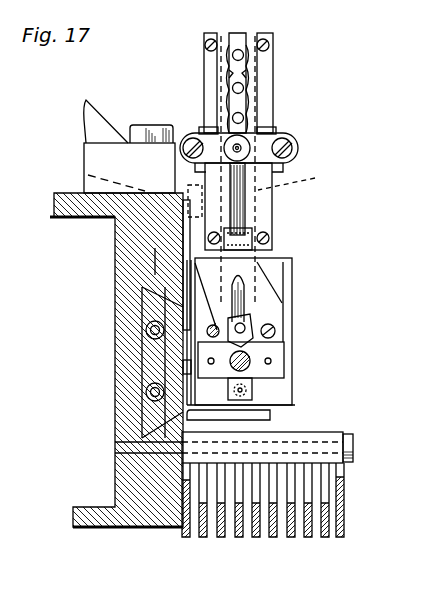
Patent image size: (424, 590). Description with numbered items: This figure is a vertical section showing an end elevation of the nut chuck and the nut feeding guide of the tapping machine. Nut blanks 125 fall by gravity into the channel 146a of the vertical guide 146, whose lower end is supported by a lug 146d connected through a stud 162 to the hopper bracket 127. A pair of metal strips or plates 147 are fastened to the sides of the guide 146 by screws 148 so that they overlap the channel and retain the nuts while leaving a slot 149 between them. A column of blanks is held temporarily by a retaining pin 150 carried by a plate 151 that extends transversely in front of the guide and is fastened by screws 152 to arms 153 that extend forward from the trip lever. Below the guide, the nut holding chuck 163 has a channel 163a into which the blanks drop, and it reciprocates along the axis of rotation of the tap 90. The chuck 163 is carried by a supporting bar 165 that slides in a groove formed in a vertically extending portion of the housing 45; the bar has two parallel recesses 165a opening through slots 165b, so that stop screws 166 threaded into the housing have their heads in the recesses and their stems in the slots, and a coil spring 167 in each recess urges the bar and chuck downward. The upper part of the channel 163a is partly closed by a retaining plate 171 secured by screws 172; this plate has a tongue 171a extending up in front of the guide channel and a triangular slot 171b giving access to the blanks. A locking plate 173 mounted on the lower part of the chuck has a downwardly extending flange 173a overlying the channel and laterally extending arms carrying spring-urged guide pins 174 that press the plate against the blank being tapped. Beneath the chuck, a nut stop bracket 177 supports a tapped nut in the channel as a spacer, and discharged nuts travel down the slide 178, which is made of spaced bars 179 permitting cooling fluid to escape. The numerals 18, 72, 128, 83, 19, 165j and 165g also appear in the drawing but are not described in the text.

The housing 45 is at (116, 530).
The frame 18 is at (163, 260).
The pin 72 is at (164, 266).
The hopper bracket 127 is at (85, 105).
The lug 146d is at (190, 180).
The nut 128 is at (138, 125).
The stud 162 is at (83, 176).
The metal strips or plates 147 is at (207, 55).
The vertical guide 146 is at (280, 36).
The slot 149 is at (250, 33).
The nut blanks 125 is at (232, 78).
The arms 153 is at (203, 128).
The plate 151 is at (265, 144).
The screws 152 is at (190, 140).
The retaining pin 150 is at (245, 150).
The channel 146a is at (310, 176).
The shaft 83 is at (420, 170).
The frame member 19 is at (405, 206).
The stop screws 166 is at (423, 240).
The screws 148 is at (265, 226).
The tongue 171a is at (250, 255).
The nut holding chuck 163 is at (300, 350).
The triangular slot 171b is at (268, 272).
The retaining plate 171 is at (272, 297).
The screws 172 is at (278, 331).
The guide pins 174 is at (290, 363).
The locking plate 173 is at (286, 370).
The flange 173a is at (262, 404).
The channel 163a is at (284, 389).
The tap 90 is at (213, 385).
The nut stop bracket 177 is at (272, 418).
The slide 178 is at (347, 497).
The spaced bars 179 is at (291, 538).
The coil spring 167 is at (146, 342).
The supporting bar 165 is at (146, 357).
The slide portion 165j is at (118, 292).
The recesses 165a is at (143, 328).
The slots 165b is at (147, 392).
The slide portion 165g is at (143, 417).